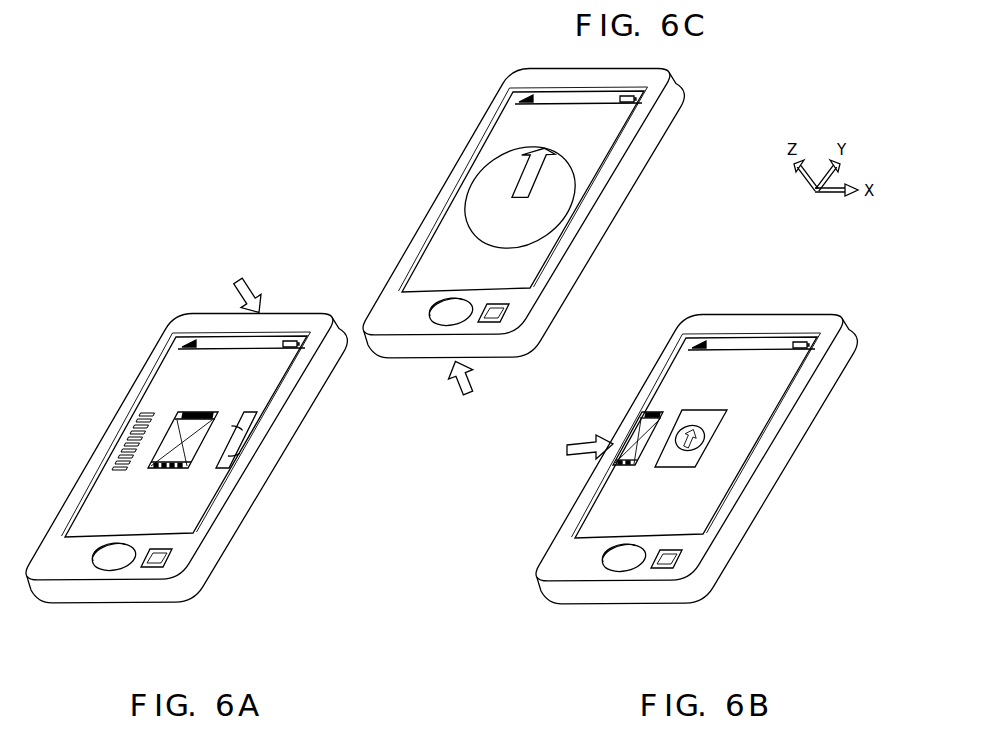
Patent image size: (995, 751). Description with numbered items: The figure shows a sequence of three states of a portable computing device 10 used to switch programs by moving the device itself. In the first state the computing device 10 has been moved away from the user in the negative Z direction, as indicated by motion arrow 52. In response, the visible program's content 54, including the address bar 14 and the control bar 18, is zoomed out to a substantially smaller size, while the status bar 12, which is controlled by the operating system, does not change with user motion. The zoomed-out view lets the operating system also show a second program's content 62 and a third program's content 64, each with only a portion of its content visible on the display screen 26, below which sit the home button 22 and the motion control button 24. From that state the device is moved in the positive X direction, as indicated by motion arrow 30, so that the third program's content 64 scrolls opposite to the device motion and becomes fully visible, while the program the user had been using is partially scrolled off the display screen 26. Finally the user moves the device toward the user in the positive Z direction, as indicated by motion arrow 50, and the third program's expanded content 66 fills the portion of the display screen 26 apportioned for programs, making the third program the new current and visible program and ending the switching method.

In FIG. 6A, the computing device 10 is at (207, 315).
In FIG. 6B, the computing device 10 is at (718, 317).
In FIG. 6C, the computing device 10 is at (543, 70).
In FIG. 6A, the status bar 12 is at (176, 340).
In FIG. 6B, the status bar 12 is at (687, 342).
In FIG. 6C, the status bar 12 is at (515, 97).
In FIG. 6A, the address bar 14 is at (123, 426).
In FIG. 6B, the address bar 14 is at (603, 435).
In FIG. 6A, the control bar 18 is at (163, 465).
In FIG. 6B, the control bar 18 is at (617, 463).
In FIG. 6A, the home button 22 is at (110, 560).
In FIG. 6B, the home button 22 is at (621, 562).
In FIG. 6C, the home button 22 is at (448, 320).
In FIG. 6A, the motion control button 24 is at (161, 560).
In FIG. 6B, the motion control button 24 is at (672, 562).
In FIG. 6C, the motion control button 24 is at (488, 320).
In FIG. 6A, the display screen 26 is at (185, 543).
In FIG. 6B, the display screen 26 is at (696, 545).
In FIG. 6C, the display screen 26 is at (522, 297).
In FIG. 6B, the motion arrow 30 is at (566, 446).
In FIG. 6C, the motion arrow 50 is at (462, 391).
In FIG. 6A, the motion arrow 52 is at (234, 280).
In FIG. 6A, the visible program's content 54 is at (173, 422).
In FIG. 6B, the visible program's content 54 is at (635, 434).
In FIG. 6A, the second program's content 62 is at (138, 433).
In FIG. 6A, the third program's content 64 is at (228, 458).
In FIG. 6B, the third program's content 64 is at (695, 463).
In FIG. 6C, the third program's expanded content 66 is at (592, 143).